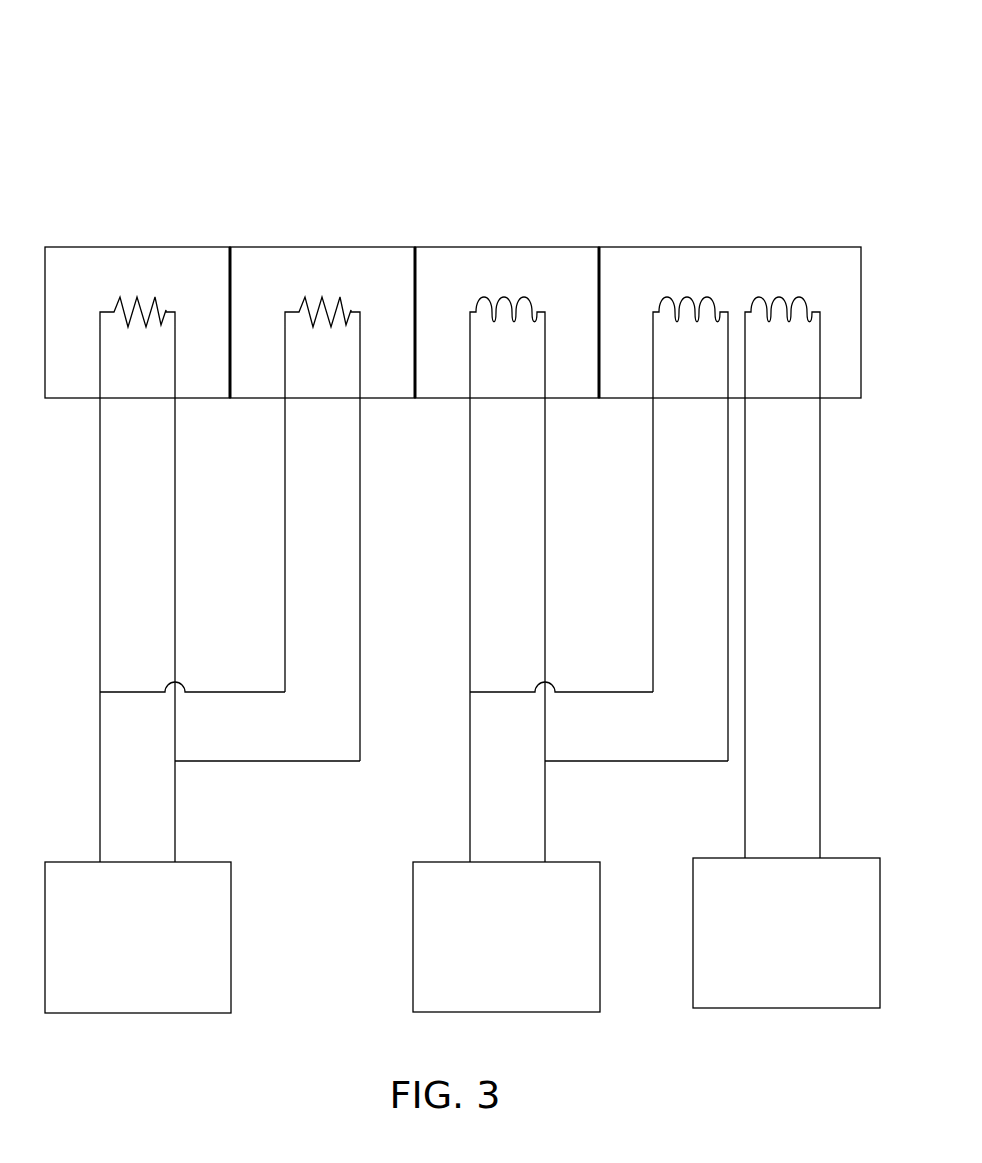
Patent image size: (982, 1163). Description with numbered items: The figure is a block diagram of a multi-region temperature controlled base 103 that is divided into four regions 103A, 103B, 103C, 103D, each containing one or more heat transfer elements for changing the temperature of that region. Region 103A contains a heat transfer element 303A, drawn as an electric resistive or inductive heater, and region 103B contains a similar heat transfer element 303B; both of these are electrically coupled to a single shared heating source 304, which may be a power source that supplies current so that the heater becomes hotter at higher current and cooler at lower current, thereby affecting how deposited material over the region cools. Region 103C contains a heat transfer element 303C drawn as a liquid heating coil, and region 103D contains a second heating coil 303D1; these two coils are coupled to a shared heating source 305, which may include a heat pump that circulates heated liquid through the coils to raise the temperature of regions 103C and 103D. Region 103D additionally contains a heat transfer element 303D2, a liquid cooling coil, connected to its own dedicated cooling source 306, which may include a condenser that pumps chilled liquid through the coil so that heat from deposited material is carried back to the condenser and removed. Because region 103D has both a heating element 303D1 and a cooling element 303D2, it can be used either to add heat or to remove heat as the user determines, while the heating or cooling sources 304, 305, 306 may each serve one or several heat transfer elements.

The multi-region temperature controlled base 103 is at (189, 76).
The region 103A is at (100, 247).
The region 103B is at (285, 247).
The region 103C is at (470, 247).
The region 103D is at (730, 247).
The heat transfer element 303A is at (153, 298).
The heat transfer element 303B is at (337, 298).
The heat transfer element 303C is at (526, 298).
The heat transfer element 303D1 is at (680, 298).
The heat transfer element 303D2 is at (800, 298).
The heating source 304 is at (111, 951).
The heating source 305 is at (480, 951).
The cooling source 306 is at (760, 947).